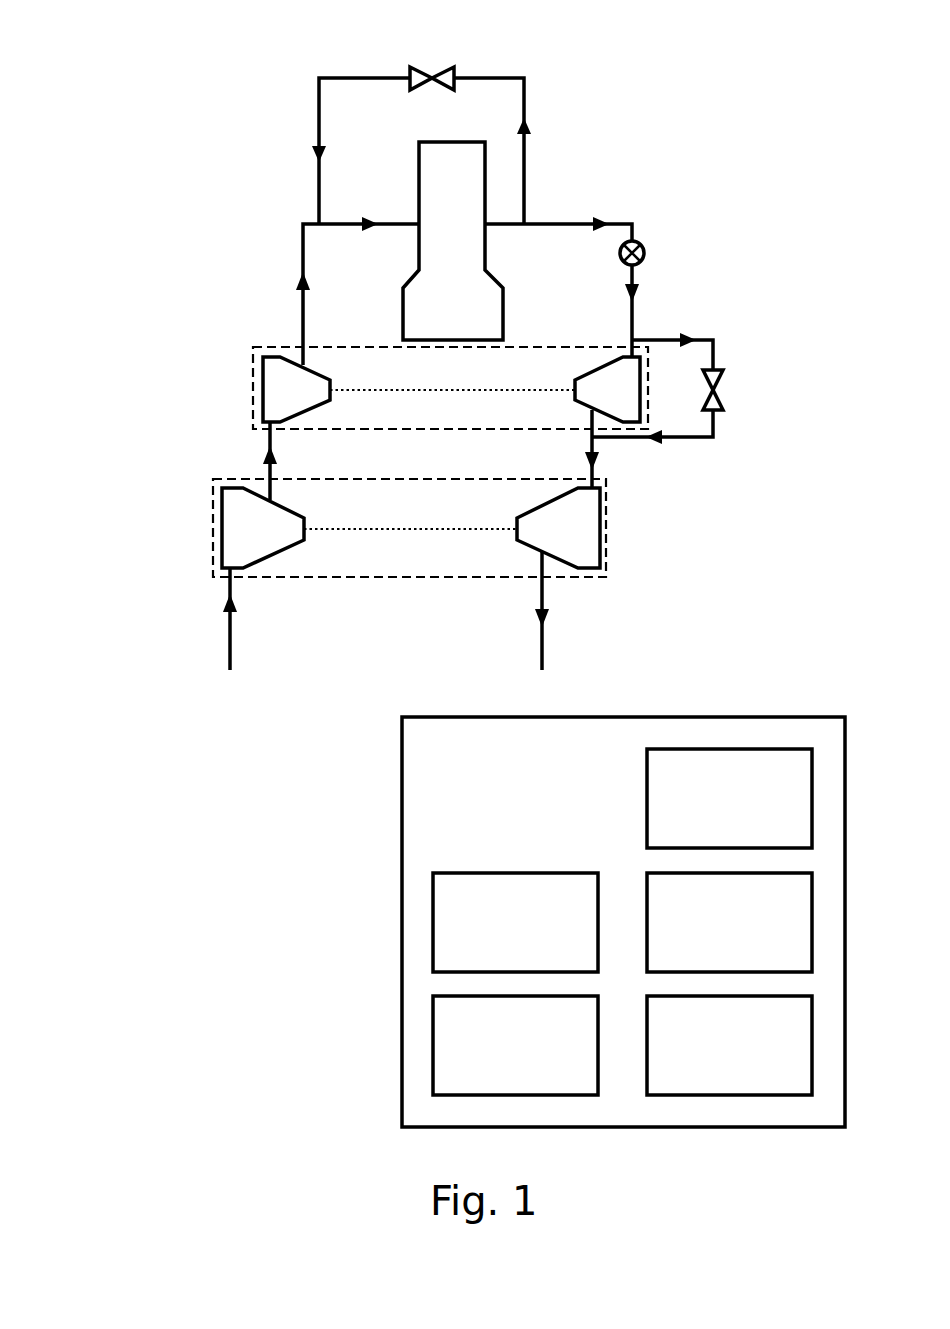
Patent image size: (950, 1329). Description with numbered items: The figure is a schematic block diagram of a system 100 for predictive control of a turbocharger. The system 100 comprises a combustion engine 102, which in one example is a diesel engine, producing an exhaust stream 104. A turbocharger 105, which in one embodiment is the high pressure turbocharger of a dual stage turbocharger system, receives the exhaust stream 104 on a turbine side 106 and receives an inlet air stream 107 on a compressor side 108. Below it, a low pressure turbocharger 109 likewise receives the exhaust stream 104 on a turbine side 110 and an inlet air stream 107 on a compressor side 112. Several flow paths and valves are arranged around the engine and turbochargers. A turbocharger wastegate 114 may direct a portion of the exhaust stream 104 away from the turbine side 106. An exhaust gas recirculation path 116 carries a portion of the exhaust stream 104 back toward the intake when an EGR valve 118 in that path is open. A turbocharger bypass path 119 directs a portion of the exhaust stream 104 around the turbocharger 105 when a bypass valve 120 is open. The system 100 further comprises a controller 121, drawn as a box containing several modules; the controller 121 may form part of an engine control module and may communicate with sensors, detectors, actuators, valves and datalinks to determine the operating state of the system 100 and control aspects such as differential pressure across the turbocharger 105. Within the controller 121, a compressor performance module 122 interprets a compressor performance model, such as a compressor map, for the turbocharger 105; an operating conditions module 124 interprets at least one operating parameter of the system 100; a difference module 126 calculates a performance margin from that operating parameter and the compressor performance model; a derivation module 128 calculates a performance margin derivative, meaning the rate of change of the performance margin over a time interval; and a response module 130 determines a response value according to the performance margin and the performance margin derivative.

The system 100 is at (86, 49).
The combustion engine 102 is at (453, 241).
The exhaust stream 104 is at (563, 223).
The turbocharger 105 is at (415, 388).
The turbine side 106 is at (607, 389).
The inlet air stream 107 is at (302, 247).
The compressor side 108 is at (296, 389).
The low pressure turbocharger 109 is at (374, 528).
The turbine side 110 is at (558, 528).
The compressor side 112 is at (263, 528).
The turbocharger wastegate 114 is at (645, 255).
The exhaust gas recirculation (EGR) path 116 is at (515, 72).
The EGR valve 118 is at (439, 70).
The turbocharger bypass path 119 is at (705, 440).
The bypass valve 120 is at (723, 373).
The controller 121 is at (623, 922).
The compressor performance module 122 is at (729, 798).
The operating conditions module 124 is at (729, 922).
The difference module 126 is at (729, 1045).
The derivation module 128 is at (515, 922).
The response module 130 is at (515, 1045).